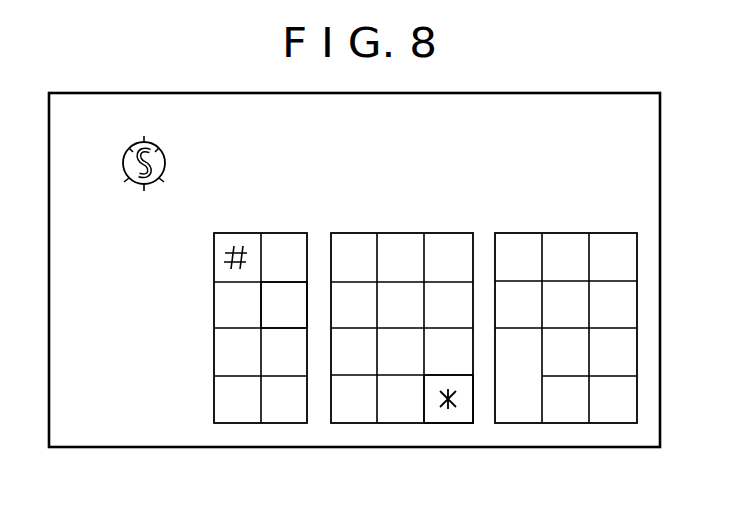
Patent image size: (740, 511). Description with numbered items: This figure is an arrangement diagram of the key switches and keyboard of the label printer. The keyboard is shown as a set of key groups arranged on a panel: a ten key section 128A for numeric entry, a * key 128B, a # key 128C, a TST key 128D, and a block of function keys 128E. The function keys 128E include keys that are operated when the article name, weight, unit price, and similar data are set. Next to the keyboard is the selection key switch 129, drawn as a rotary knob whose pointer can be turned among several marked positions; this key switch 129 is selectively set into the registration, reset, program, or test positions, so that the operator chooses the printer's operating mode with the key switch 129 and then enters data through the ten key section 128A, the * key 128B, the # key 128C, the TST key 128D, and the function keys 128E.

The selection key switch 129 is at (122, 169).
The ten key section 128A is at (405, 233).
The * key 128B is at (452, 425).
The # key 128C is at (248, 232).
The TST key 128D is at (310, 287).
The function keys 128E is at (562, 233).